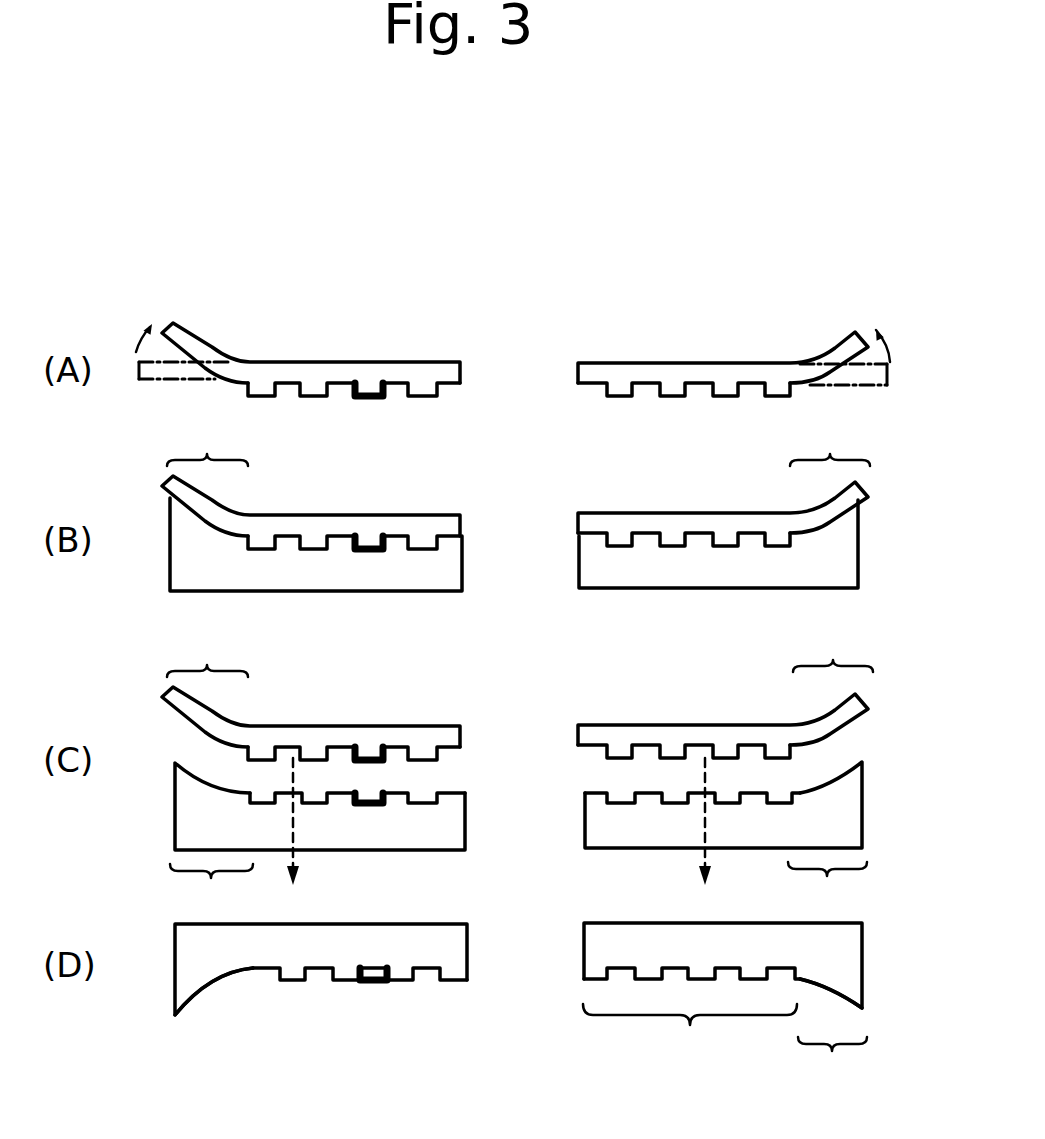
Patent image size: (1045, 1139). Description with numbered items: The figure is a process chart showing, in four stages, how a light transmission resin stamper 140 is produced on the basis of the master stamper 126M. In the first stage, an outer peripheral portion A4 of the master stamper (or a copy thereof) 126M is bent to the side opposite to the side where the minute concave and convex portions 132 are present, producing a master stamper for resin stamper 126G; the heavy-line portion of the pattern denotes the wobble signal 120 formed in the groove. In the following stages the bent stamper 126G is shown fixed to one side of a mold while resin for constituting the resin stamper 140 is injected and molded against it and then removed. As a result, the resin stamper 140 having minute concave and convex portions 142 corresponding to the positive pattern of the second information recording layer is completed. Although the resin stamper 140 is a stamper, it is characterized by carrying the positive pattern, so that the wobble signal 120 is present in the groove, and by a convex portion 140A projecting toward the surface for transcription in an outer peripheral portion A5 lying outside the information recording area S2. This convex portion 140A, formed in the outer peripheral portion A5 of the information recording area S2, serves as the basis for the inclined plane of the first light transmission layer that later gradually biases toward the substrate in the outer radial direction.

The master stamper 126M is at (447, 372).
The master stamper for resin stamper 126G is at (515, 546).
The minute concave and convex portions 132 is at (313, 528).
The wobble signal 120 is at (369, 545).
The resin stamper 140 is at (557, 907).
The minute concave and convex portions 142 is at (425, 792).
The convex portion 140A is at (192, 991).
The outer peripheral portion A4 is at (520, 551).
The outer peripheral portion A5 is at (518, 974).
The information recording area S2 is at (690, 1031).